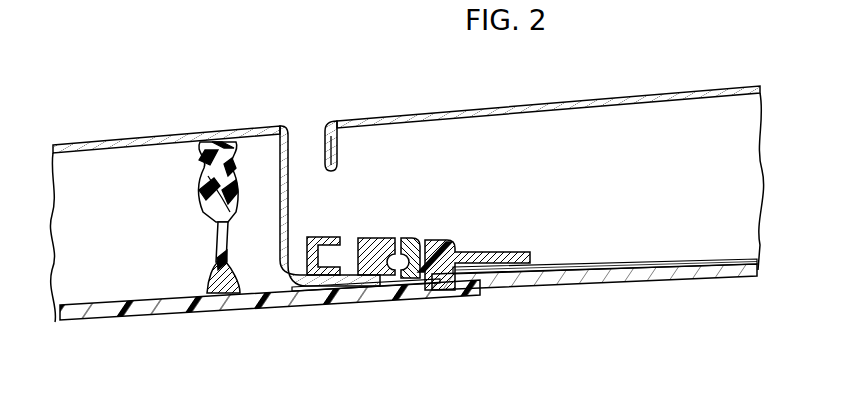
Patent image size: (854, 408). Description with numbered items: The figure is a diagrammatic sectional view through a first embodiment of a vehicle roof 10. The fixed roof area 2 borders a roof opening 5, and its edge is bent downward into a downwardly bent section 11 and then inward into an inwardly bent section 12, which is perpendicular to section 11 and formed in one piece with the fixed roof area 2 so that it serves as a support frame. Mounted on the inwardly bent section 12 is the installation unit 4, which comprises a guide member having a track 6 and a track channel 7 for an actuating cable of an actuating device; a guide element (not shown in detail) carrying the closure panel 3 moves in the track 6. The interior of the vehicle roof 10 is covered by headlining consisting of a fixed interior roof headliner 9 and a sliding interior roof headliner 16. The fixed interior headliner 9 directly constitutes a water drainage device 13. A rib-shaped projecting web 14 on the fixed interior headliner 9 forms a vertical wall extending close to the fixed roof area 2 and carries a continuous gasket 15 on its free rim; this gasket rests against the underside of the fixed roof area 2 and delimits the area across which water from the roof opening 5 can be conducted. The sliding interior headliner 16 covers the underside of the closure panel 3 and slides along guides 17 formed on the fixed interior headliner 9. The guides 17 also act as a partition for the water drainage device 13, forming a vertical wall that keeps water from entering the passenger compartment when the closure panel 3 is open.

The fixed roof area 2 is at (117, 144).
The closure panel 3 is at (683, 88).
The installation unit 4 is at (406, 229).
The roof opening 5 is at (304, 142).
The track 6 is at (338, 258).
The track channel 7 is at (396, 268).
The fixed interior roof headliner 9 is at (148, 312).
The vehicle roof 10 is at (368, 96).
The downwardly bent section 11 is at (288, 200).
The inwardly bent section 12 is at (362, 289).
The water drainage device 13 is at (259, 216).
The projecting web 14 is at (222, 248).
The continuous gasket 15 is at (222, 141).
The sliding interior roof headliner 16 is at (645, 277).
The guides 17 is at (437, 292).